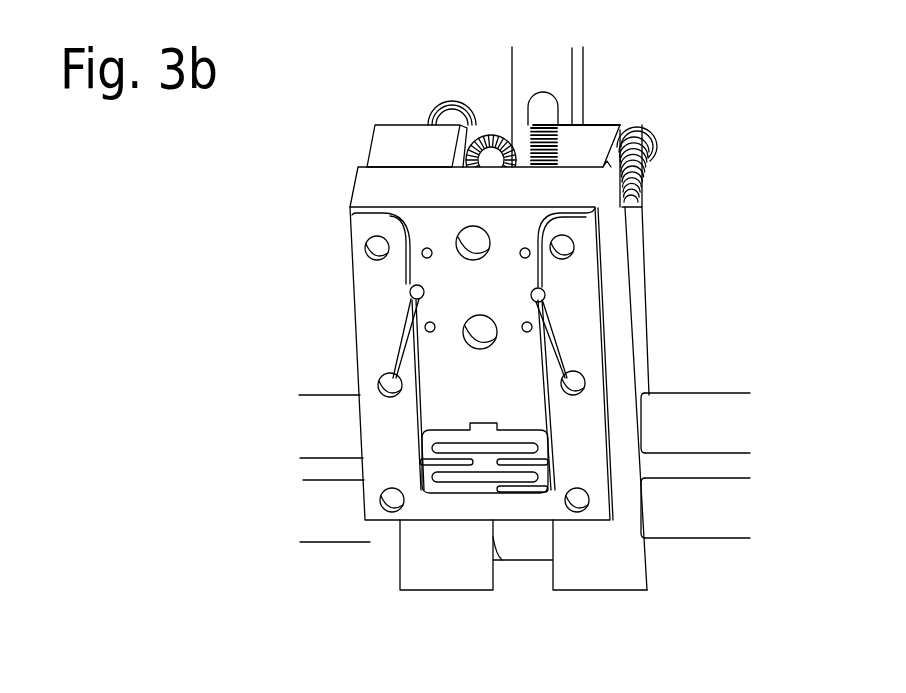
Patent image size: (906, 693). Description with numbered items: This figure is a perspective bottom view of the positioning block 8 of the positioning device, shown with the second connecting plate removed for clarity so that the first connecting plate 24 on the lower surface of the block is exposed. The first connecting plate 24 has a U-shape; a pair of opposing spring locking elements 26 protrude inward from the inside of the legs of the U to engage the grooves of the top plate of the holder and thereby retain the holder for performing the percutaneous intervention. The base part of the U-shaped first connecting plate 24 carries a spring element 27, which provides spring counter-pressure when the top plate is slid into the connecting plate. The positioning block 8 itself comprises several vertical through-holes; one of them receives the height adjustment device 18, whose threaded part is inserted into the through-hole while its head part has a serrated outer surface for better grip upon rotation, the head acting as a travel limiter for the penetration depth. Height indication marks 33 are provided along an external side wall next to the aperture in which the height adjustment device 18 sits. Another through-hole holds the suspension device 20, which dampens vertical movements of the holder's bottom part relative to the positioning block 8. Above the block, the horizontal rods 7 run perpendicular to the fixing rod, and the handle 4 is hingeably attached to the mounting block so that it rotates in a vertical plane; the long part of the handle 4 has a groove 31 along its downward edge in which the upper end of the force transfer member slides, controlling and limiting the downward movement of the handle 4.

The handle 4 is at (548, 60).
The horizontal rods 7 is at (340, 523).
The positioning block 8 is at (388, 140).
The height adjustment device 18 is at (490, 132).
The suspension device 20 is at (444, 110).
The first connecting plate 24 is at (357, 228).
The spring locking elements 26 is at (407, 292).
The spring element 27 is at (470, 470).
The groove 31 is at (542, 107).
The height indication marks 33 is at (558, 137).